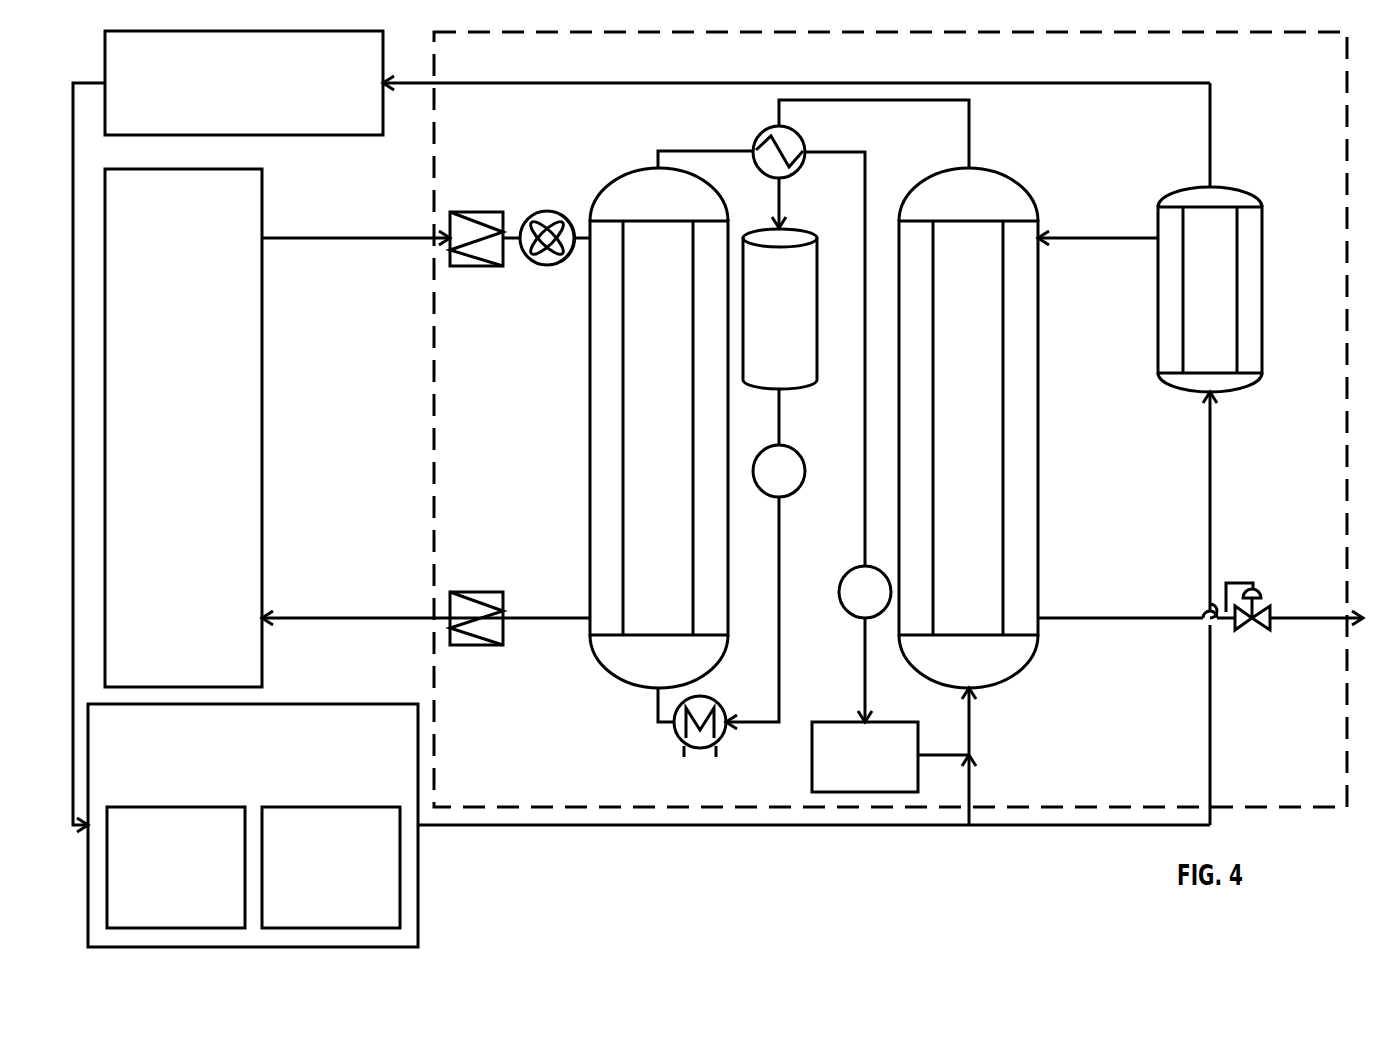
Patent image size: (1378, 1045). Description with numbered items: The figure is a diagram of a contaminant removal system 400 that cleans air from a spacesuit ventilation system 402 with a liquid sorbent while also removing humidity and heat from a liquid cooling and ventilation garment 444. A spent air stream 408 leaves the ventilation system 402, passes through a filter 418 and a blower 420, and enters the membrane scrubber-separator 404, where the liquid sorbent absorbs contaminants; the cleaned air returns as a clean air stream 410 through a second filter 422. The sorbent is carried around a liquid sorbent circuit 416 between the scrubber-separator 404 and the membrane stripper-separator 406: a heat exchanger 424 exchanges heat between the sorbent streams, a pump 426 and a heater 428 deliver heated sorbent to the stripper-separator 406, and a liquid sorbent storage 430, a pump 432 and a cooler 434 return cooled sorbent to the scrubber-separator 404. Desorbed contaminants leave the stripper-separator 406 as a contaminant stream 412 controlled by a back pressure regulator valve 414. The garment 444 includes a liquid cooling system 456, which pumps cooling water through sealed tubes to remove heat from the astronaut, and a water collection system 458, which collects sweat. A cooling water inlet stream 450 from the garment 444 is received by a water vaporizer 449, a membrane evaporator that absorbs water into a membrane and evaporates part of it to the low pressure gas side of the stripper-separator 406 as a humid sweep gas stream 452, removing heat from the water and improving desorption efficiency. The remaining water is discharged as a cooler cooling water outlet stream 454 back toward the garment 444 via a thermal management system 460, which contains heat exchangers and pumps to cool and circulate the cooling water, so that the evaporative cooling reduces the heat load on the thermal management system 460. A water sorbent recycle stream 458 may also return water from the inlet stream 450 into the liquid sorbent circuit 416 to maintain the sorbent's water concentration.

The contaminant removal system 400 is at (1340, 92).
The ventilation system 402 is at (200, 467).
The membrane scrubber-separator 404 is at (675, 441).
The membrane stripper-separator 406 is at (985, 441).
The spent air stream 408 is at (318, 238).
The clean air stream 410 is at (305, 618).
The contaminant stream 412 is at (1055, 618).
The back pressure regulator valve 414 is at (1260, 598).
The liquid sorbent circuit 416 is at (1005, 131).
The filter 418 is at (470, 212).
The blower 420 is at (562, 217).
The filter 422 is at (470, 592).
The heat exchanger 424 is at (800, 138).
The pump 426 is at (882, 603).
The heater 428 is at (882, 781).
The liquid sorbent storage 430 is at (796, 319).
The pump 432 is at (796, 482).
The cooler 434 is at (712, 698).
The liquid cooling and ventilation garment 444 is at (269, 792).
The water vaporizer 449 is at (1227, 301).
The cooling water inlet stream 450 is at (1210, 450).
The sweep gas stream 452 is at (1055, 238).
The cooling water outlet stream 454 is at (483, 83).
The liquid cooling system 456 is at (192, 922).
The water collection system 458 is at (997, 773).
The thermal management system 460 is at (260, 122).